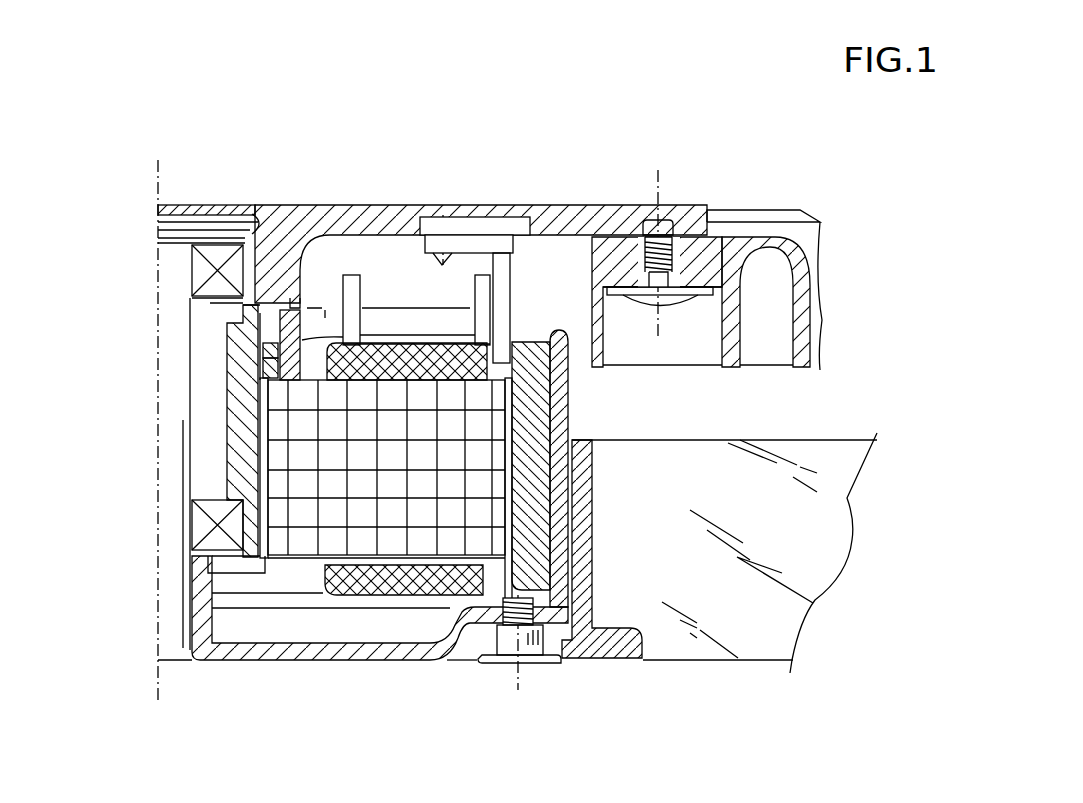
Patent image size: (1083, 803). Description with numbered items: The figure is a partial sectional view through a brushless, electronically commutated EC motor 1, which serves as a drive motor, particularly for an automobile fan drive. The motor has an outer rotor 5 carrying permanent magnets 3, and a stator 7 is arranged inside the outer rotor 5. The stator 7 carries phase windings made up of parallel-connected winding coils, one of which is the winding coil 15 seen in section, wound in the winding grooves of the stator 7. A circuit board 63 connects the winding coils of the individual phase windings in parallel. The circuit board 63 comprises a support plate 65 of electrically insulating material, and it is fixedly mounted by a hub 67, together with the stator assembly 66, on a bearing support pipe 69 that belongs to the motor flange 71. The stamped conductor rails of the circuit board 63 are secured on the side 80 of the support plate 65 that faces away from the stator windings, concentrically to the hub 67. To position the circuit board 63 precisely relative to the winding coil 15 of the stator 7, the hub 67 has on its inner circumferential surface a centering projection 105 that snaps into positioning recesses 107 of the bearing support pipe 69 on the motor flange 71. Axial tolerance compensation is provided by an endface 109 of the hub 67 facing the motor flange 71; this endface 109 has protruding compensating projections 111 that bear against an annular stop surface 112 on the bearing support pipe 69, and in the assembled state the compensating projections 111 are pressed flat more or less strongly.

The EC motor 1 is at (710, 158).
The permanent magnets 3 is at (532, 547).
The outer rotor 5 is at (424, 680).
The stator 7 is at (510, 423).
The winding coil 15 is at (397, 590).
The circuit board 63 is at (390, 298).
The support plate 65 is at (453, 317).
The stator assembly 66 is at (317, 545).
The hub 67 is at (292, 357).
The bearing support pipe 69 is at (246, 452).
The motor flange 71 is at (467, 205).
The side of the support plate 80 is at (380, 350).
The centering projection 105 is at (272, 373).
The positioning recesses 107 is at (270, 342).
The endface 109 is at (325, 312).
The compensating projections 111 is at (283, 297).
The annular stop surface 112 is at (295, 300).